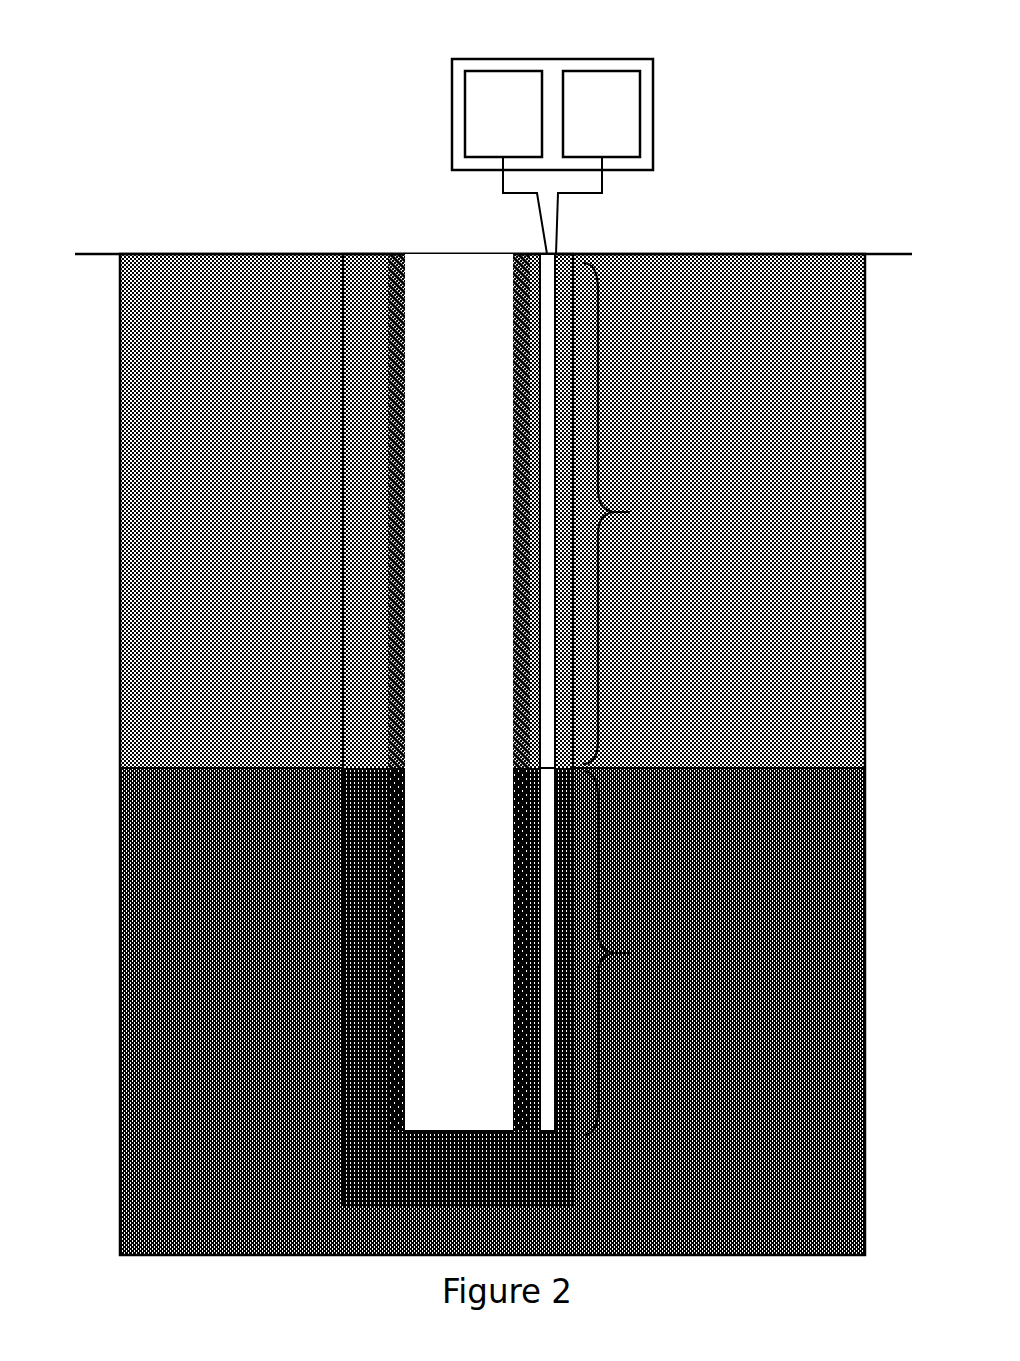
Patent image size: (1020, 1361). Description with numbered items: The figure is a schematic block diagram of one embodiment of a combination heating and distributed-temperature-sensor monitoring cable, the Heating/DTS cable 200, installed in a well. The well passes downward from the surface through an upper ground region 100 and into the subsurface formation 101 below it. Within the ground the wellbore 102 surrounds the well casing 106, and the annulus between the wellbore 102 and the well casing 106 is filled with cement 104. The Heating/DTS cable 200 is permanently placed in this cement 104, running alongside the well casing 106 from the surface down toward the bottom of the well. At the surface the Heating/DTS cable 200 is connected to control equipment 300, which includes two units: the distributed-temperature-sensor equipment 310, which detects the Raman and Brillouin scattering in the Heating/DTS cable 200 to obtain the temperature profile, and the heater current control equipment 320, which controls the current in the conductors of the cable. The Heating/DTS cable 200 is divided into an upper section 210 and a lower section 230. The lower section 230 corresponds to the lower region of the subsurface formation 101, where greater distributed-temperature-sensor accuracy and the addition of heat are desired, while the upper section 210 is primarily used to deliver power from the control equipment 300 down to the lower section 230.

The upper subsurface formation 100 is at (118, 453).
The subsurface formation 101 is at (118, 833).
The wellbore 102 is at (345, 254).
The cement 104 is at (367, 254).
The well casing 106 is at (403, 254).
The Heating/DTS cable 200 is at (557, 252).
The upper section 210 is at (634, 513).
The lower section 230 is at (634, 953).
The control equipment 300 is at (597, 59).
The distributed-temperature-sensor equipment 310 is at (503, 75).
The heater current control equipment 320 is at (638, 112).